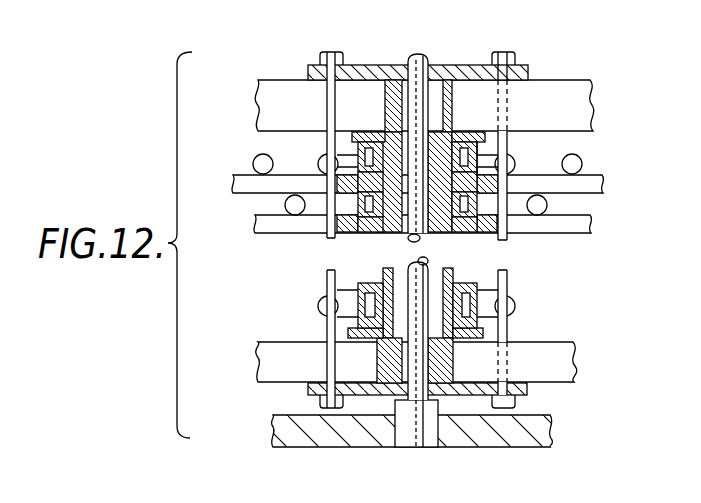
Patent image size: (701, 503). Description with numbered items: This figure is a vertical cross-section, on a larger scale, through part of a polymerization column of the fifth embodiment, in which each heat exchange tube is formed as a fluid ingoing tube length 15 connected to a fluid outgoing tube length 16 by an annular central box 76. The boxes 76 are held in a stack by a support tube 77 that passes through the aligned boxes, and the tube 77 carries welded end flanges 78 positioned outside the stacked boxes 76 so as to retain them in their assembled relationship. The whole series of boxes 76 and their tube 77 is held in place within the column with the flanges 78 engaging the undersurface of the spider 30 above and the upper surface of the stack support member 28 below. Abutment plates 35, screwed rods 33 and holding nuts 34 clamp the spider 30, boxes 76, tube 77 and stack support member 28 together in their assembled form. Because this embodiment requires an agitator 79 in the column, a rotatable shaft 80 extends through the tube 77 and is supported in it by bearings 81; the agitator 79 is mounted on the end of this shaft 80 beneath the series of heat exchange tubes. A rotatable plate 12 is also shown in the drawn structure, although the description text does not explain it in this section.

The spider 30 is at (281, 84).
The abutment plates 35 is at (378, 65).
The bearings 81 is at (400, 134).
The end flanges 78 is at (463, 137).
The fluid ingoing tube length 15 is at (325, 165).
The fluid outgoing tube length 16 is at (472, 167).
The annular central box 76 is at (500, 165).
The rotatable plate 12 is at (580, 212).
The screwed rods 33 is at (328, 270).
The support tube 77 is at (388, 270).
The rotatable shaft 80 is at (426, 247).
The stack support member 28 is at (566, 341).
The holding nuts 34 is at (320, 404).
The agitator 79 is at (354, 432).